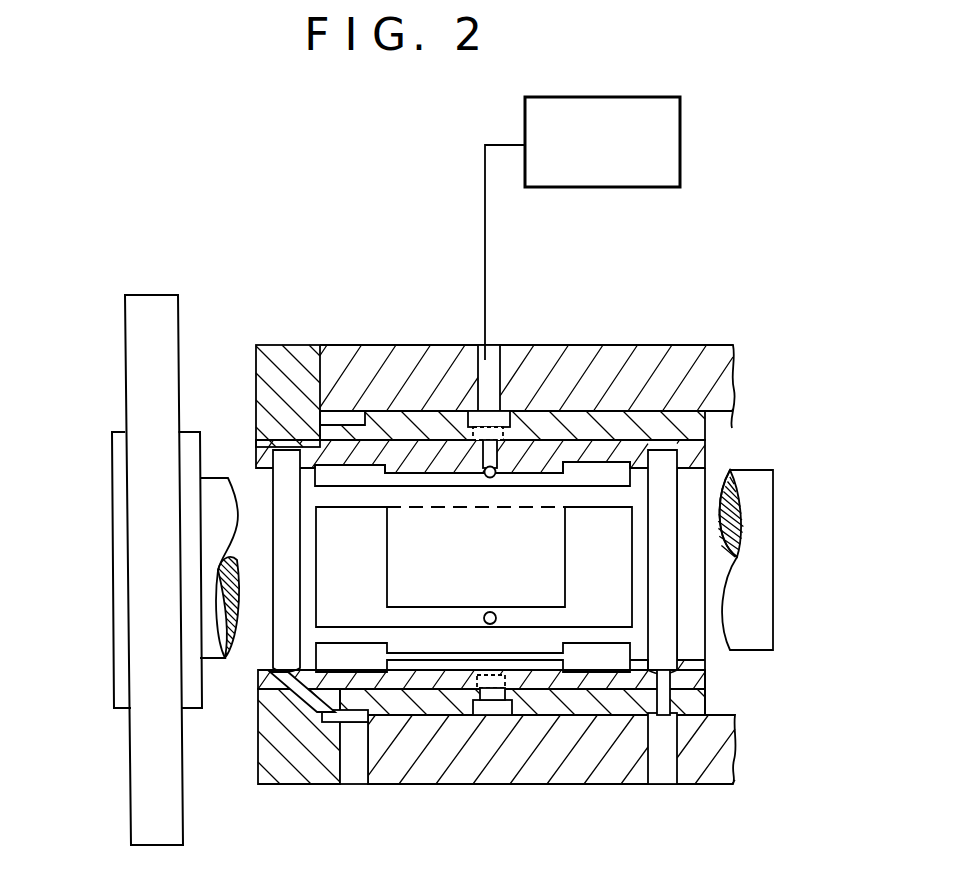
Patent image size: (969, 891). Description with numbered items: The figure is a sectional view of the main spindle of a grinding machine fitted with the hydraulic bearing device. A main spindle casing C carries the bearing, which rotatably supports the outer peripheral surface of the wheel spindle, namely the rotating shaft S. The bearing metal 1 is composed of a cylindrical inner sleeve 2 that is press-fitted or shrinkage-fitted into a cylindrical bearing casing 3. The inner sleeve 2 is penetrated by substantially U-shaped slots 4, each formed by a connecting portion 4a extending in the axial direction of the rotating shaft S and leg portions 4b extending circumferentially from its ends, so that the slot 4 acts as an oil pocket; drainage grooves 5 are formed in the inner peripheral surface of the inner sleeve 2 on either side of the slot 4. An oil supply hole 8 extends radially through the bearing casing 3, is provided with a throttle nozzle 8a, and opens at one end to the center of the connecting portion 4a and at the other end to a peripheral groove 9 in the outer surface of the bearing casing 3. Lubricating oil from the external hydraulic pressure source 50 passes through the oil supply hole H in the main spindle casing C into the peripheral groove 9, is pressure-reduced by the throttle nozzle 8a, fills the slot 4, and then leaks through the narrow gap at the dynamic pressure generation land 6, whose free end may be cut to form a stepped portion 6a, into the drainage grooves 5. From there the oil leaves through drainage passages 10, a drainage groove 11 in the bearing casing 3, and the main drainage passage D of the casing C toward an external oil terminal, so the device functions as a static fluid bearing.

The bearing metal 1 is at (780, 372).
The inner sleeve 2 is at (688, 455).
The bearing casing 3 is at (637, 425).
The substantially U-shaped slot 4 is at (48, 590).
The connecting portion 4a is at (402, 617).
The leg portions 4b is at (340, 570).
The drainage grooves 5 is at (283, 527).
The dynamic pressure generation land 6 is at (413, 553).
The stepped portion 6a is at (540, 657).
The oil supply hole 8 is at (478, 425).
The throttle nozzle 8a is at (413, 365).
The peripheral groove 9 is at (505, 420).
The drainage passage 10 is at (308, 693).
The drainage groove 11 is at (347, 723).
The hydraulic pressure source 50 is at (602, 142).
The main spindle casing C is at (608, 370).
The main drainage passage D is at (355, 770).
The oil supply hole H is at (490, 390).
The rotating shaft S is at (210, 508).